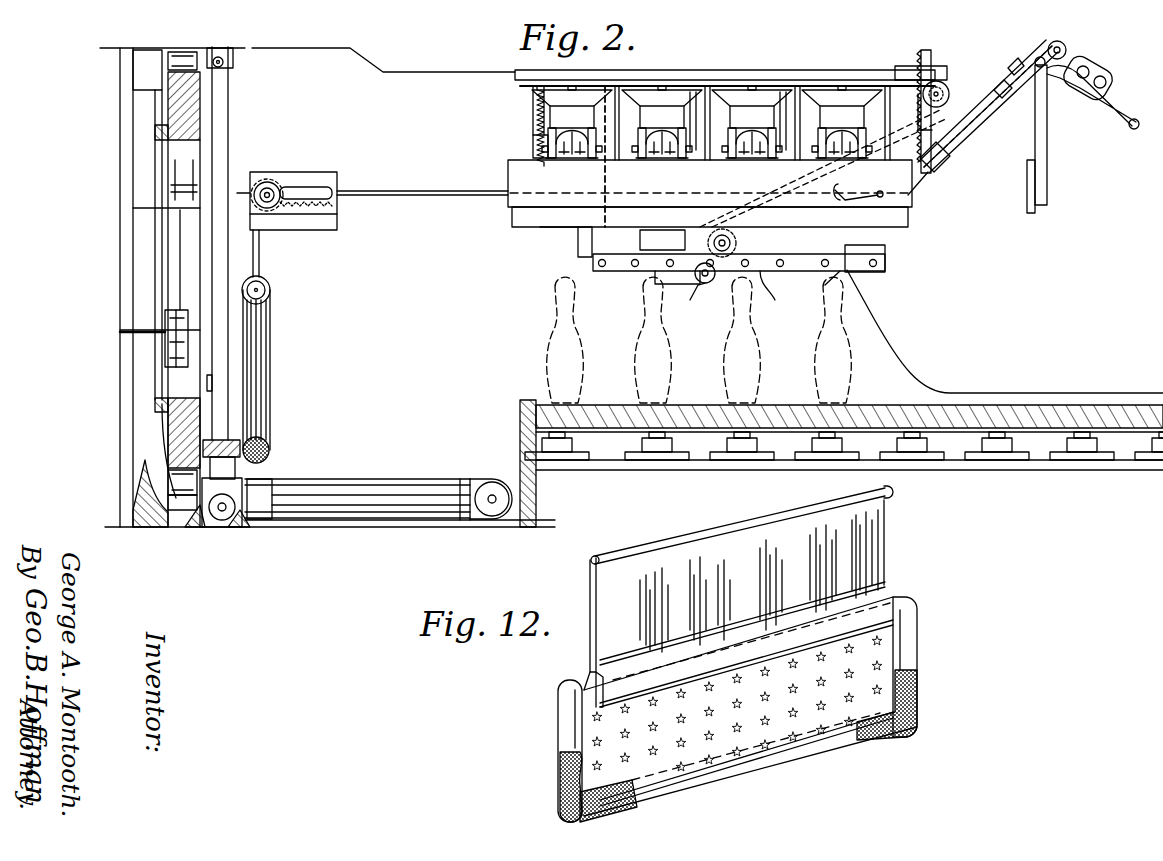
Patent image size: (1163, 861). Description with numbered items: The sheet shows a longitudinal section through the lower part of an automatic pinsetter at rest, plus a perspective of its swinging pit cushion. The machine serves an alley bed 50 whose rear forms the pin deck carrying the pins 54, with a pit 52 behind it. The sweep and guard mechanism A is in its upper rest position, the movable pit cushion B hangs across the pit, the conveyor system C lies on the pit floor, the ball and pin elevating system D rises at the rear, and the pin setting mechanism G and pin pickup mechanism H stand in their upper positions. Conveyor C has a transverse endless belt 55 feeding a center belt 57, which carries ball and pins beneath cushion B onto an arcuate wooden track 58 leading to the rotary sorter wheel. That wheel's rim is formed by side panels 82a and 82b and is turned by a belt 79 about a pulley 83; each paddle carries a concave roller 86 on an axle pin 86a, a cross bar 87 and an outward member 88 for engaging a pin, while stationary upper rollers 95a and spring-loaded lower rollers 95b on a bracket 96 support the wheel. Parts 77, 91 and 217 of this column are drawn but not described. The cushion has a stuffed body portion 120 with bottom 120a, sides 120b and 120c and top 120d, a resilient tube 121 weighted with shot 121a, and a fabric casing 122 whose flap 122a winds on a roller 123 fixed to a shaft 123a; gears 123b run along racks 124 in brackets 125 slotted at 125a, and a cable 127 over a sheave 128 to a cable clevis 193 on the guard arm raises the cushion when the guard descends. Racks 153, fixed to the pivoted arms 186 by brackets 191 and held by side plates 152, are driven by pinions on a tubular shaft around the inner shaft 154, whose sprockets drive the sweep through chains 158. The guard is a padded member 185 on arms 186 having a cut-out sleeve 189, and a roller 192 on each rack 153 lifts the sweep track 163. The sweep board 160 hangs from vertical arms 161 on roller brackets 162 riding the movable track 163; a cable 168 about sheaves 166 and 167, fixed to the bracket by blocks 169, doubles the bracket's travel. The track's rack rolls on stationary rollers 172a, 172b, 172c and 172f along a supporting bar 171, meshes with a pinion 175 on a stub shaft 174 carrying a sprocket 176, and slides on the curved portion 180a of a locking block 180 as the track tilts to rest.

In FIG. 2, the alley bed 50 is at (910, 405).
In FIG. 2, the pit 52 is at (496, 520).
In FIG. 2, the pins 54 is at (648, 330).
In FIG. 2, the endless belt 55 is at (348, 480).
In FIG. 2, the third endless belt 57 is at (350, 508).
In FIG. 2, the arcuate wooden track 58 is at (205, 522).
In FIG. 2, the vertical rod 77 is at (228, 130).
In FIG. 2, the belt 79 is at (162, 98).
In FIG. 2, the side panel 82a is at (170, 448).
In FIG. 2, the side panel 82b is at (168, 424).
In FIG. 2, the pulley 83 is at (158, 402).
In FIG. 2, the roller 86 is at (183, 55).
In FIG. 2, the axle pin 86a is at (170, 498).
In FIG. 2, the cross bar 87 is at (168, 505).
In FIG. 2, the member 88 is at (188, 525).
In FIG. 2, the latch housing 91 is at (172, 338).
In FIG. 2, the upper pair of rollers 95a is at (178, 200).
In FIG. 2, the lower pair of rollers 95b is at (120, 330).
In FIG. 2, the bracket 96 is at (178, 265).
In FIG. 2, the body portion 120 is at (270, 388).
In FIG. 12, the body portion 120 is at (580, 718).
In FIG. 2, the bottom 120a is at (272, 426).
In FIG. 12, the bottom 120a is at (722, 780).
In FIG. 12, the side 120b is at (568, 740).
In FIG. 12, the side 120c is at (903, 646).
In FIG. 12, the top 120d is at (588, 685).
In FIG. 2, the resilient tube 121 is at (270, 285).
In FIG. 12, the resilient tube 121 is at (560, 786).
In FIG. 2, the shot 121a is at (268, 458).
In FIG. 12, the shot 121a is at (615, 805).
In FIG. 12, the fabric casing 122 is at (590, 784).
In FIG. 2, the flap 122a is at (262, 250).
In FIG. 12, the flap 122a is at (600, 597).
In FIG. 2, the roller 123 is at (272, 190).
In FIG. 12, the roller 123 is at (620, 558).
In FIG. 2, the shaft 123a is at (272, 190).
In FIG. 12, the shaft 123a is at (590, 560).
In FIG. 2, the gears 123b is at (265, 185).
In FIG. 2, the racks 124 is at (335, 222).
In FIG. 2, the brackets 125 is at (330, 180).
In FIG. 2, the slot 125a is at (395, 188).
In FIG. 2, the cable 127 is at (428, 193).
In FIG. 2, the sheave 128 is at (842, 190).
In FIG. 2, the side plates 152 is at (945, 92).
In FIG. 2, the racks 153 is at (932, 55).
In FIG. 2, the inner shaft 154 is at (920, 74).
In FIG. 2, the chains 158 is at (808, 172).
In FIG. 2, the board 160 is at (1035, 210).
In FIG. 2, the vertical arms 161 is at (1047, 141).
In FIG. 2, the roller brackets 162 is at (1050, 100).
In FIG. 2, the movable track 163 is at (1038, 58).
In FIG. 2, the sheave 166 is at (708, 283).
In FIG. 2, the sheave 167 is at (1064, 46).
In FIG. 2, the cable 168 is at (770, 280).
In FIG. 2, the blocks 169 is at (1012, 68).
In FIG. 2, the supporting bar 171 is at (888, 255).
In FIG. 2, the stationary roller 172a is at (592, 258).
In FIG. 2, the stationary roller 172b is at (650, 273).
In FIG. 2, the stationary roller 172c is at (830, 280).
In FIG. 2, the stationary roller 172f is at (876, 272).
In FIG. 2, the stub shaft 174 is at (694, 292).
In FIG. 2, the pinion 175 is at (712, 240).
In FIG. 2, the sprocket 176 is at (748, 222).
In FIG. 2, the block 180 is at (655, 280).
In FIG. 2, the curved portion 180a is at (662, 240).
In FIG. 2, the padded member 185 is at (1110, 78).
In FIG. 2, the pivoted arms 186 is at (975, 125).
In FIG. 2, the partially cut out sleeve 189 is at (1000, 120).
In FIG. 2, the brackets 191 is at (940, 180).
In FIG. 2, the roller 192 is at (950, 160).
In FIG. 2, the cable clevis 193 is at (912, 220).
In FIG. 2, the stop 217 is at (232, 264).
In FIG. 2, the sweep and guard mechanism A is at (1095, 58).
In FIG. 2, the movable pit cushion B is at (281, 337).
In FIG. 2, the conveyor system C is at (411, 471).
In FIG. 2, the ball and pin elevating system D is at (112, 245).
In FIG. 2, the pin setting mechanism G is at (524, 117).
In FIG. 2, the pin pickup mechanism H is at (500, 175).